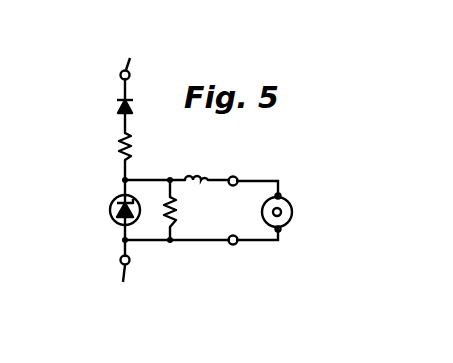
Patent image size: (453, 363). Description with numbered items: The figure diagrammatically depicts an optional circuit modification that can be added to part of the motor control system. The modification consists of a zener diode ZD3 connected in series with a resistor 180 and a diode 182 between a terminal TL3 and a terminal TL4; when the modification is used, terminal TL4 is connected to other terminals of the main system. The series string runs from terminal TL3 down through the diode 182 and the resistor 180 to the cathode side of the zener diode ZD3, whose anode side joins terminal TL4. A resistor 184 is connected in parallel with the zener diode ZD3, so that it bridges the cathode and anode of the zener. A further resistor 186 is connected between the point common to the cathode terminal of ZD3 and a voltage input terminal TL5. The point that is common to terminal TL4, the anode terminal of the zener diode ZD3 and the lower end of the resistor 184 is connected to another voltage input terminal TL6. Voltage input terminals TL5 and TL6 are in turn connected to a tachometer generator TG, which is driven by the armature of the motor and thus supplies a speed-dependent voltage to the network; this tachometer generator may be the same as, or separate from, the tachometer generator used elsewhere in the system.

The terminal TL3 is at (135, 55).
The diode 182 is at (117, 104).
The resistor 180 is at (118, 148).
The zener diode ZD3 is at (110, 205).
The terminal TL4 is at (122, 283).
The resistor 186 is at (191, 173).
The resistor 184 is at (178, 213).
The voltage input terminal TL5 is at (233, 176).
The voltage input terminal TL6 is at (232, 245).
The tachometer generator TG is at (294, 212).